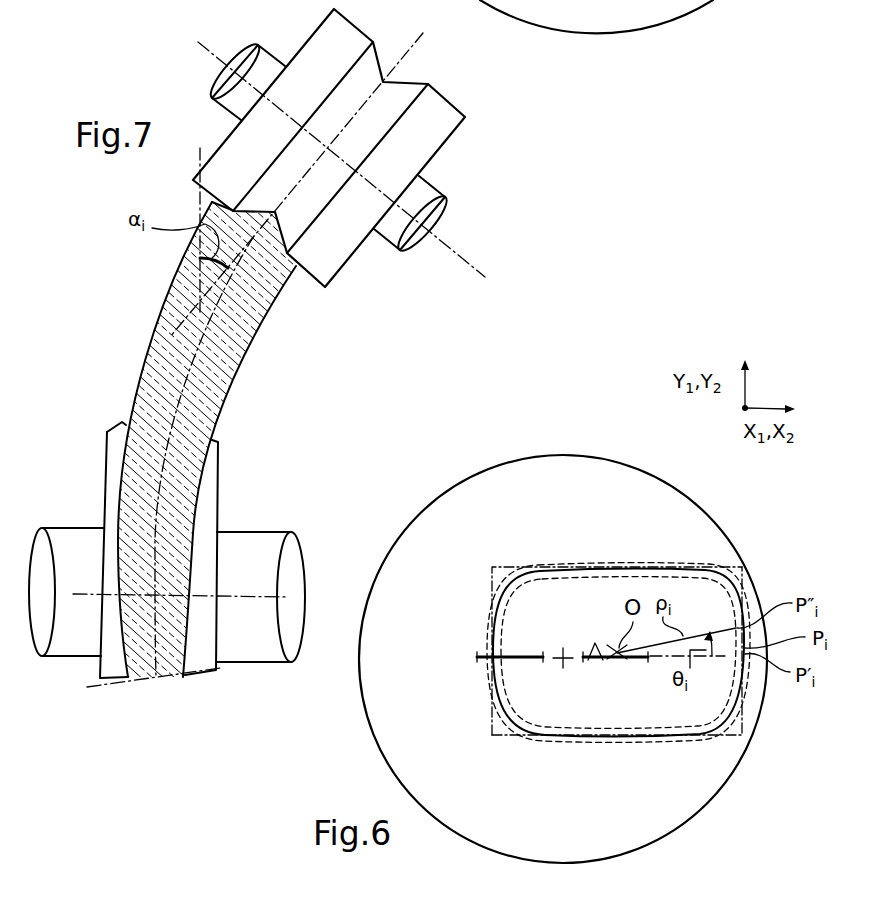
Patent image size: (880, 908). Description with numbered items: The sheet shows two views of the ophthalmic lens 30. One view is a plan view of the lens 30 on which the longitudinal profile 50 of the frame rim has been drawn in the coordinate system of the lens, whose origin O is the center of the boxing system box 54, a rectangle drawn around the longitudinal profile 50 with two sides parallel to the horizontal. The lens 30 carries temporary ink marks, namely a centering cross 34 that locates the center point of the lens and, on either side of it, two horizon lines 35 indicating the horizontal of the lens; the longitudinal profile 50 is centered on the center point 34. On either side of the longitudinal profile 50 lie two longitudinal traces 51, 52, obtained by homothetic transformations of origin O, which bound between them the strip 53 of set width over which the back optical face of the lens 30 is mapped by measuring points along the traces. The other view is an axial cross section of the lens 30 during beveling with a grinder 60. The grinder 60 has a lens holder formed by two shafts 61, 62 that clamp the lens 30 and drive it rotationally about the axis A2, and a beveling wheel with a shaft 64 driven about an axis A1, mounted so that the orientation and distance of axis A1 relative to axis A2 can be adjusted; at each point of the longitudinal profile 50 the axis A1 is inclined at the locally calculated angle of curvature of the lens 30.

In FIG. 7, the ophthalmic lens 30 is at (223, 403).
In FIG. 6, the ophthalmic lens 30 is at (700, 508).
In FIG. 7, the grinder 60 is at (472, 109).
In FIG. 7, the tool shaft 64 is at (432, 162).
In FIG. 7, the axis of the beveling wheel A1 is at (458, 250).
In FIG. 7, the axis of rotation of the lens A2 is at (245, 596).
In FIG. 7, the shaft 62 is at (70, 527).
In FIG. 7, the shaft 61 is at (270, 533).
In FIG. 6, the longitudinal profile 50 is at (620, 568).
In FIG. 6, the longitudinal trace 51 is at (690, 736).
In FIG. 6, the longitudinal trace 52 is at (753, 712).
In FIG. 6, the strip 53 is at (492, 702).
In FIG. 6, the boxing system box 54 is at (741, 568).
In FIG. 6, the centering cross 34 is at (582, 655).
In FIG. 6, the horizon lines 35 is at (513, 654).